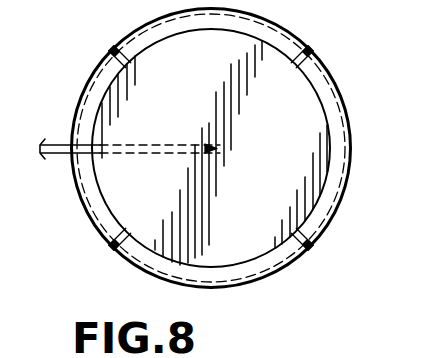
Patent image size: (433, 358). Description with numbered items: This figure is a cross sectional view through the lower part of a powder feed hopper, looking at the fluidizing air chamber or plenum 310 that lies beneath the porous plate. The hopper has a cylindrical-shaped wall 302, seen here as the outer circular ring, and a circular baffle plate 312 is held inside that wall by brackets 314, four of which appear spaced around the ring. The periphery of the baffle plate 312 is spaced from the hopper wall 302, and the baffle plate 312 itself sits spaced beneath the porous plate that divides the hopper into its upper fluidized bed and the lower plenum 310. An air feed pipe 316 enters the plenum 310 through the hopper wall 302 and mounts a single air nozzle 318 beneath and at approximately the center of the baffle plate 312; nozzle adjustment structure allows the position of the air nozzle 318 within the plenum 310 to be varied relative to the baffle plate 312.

The cylindrical-shaped wall 302 is at (341, 181).
The fluidizing air chamber or plenum 310 is at (339, 126).
The circular baffle plate 312 is at (201, 66).
The brackets 314 is at (105, 64).
The air feed pipe 316 is at (54, 143).
The air nozzle 318 is at (232, 144).